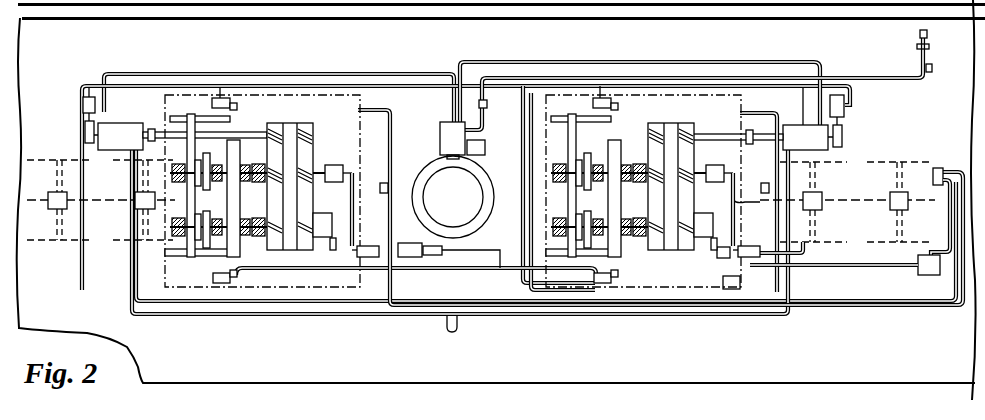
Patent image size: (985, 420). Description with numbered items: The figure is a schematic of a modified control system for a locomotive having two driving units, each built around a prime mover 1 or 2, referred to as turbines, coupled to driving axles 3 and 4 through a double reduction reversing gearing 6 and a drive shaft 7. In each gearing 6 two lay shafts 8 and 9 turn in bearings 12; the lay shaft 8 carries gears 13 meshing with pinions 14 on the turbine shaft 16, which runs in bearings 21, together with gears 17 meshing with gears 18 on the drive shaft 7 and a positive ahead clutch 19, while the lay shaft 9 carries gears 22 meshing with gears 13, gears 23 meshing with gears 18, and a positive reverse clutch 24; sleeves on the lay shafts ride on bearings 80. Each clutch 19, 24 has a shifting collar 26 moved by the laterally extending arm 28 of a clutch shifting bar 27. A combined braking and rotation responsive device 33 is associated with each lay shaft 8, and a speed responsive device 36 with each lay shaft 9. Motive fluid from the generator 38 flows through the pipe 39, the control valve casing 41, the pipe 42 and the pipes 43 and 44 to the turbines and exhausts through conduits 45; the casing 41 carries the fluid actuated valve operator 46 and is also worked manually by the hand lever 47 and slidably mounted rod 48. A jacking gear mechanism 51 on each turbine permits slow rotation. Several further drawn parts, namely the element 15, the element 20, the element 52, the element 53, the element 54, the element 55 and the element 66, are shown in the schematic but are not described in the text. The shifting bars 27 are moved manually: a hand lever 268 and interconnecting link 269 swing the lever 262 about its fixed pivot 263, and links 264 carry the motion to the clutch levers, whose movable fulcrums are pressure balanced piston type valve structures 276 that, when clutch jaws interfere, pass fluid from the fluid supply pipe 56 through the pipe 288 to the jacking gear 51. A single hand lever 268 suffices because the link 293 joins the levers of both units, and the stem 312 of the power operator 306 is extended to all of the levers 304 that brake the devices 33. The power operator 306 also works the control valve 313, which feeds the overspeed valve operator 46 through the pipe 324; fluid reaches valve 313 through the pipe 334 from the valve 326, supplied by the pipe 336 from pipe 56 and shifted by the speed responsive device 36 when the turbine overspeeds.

The prime mover 1 is at (760, 137).
The prime mover 2 is at (120, 136).
The driving axles 3 is at (847, 202).
The driving axles 4 is at (108, 200).
The gearing 6 is at (218, 160).
The drive shaft 7 is at (746, 201).
The lay shaft 8 is at (170, 173).
The lay shaft 9 is at (170, 227).
The bearings 12 is at (423, 193).
The gears 13 is at (481, 186).
The pinions 14 is at (268, 128).
The axle 15 is at (805, 192).
The turbine shaft 16 is at (231, 134).
The gears 17 is at (426, 198).
The gears 18 is at (231, 196).
The positive ahead clutch 19 is at (204, 156).
The motor shaft 20 is at (205, 135).
The bearings 21 is at (294, 125).
The gears 22 is at (480, 242).
The gears 23 is at (424, 250).
The positive reverse clutch 24 is at (391, 226).
The shifting collar 26 is at (197, 186).
The clutch shifting bar 27 is at (176, 264).
The laterally extending arm 28 is at (195, 128).
The combined braking and rotation responsive device 33 is at (325, 165).
The speed responsive device 36 is at (316, 216).
The generator 38 is at (460, 204).
The pipe 39 is at (440, 170).
The control valve casing 41 is at (440, 137).
The pipe 42 is at (452, 112).
The pipe 43 is at (684, 60).
The pipe 44 is at (298, 74).
The conduits 45 is at (206, 317).
The fluid actuated valve operator 46 is at (485, 147).
The hand lever 47 is at (928, 41).
The slidably mounted rod 48 is at (856, 77).
The jacking gear mechanism 51 is at (83, 105).
The valve 52 is at (410, 243).
The fitting 53 is at (503, 252).
The valve 54 is at (507, 132).
The pipe 55 is at (512, 282).
The fluid supply pipe 56 is at (287, 296).
The valve 66 is at (940, 170).
The bearings 80 is at (423, 206).
The lever 262 is at (389, 128).
The fixed pivot 263 is at (564, 182).
The links 264 is at (361, 99).
The hand lever 268 is at (937, 208).
The interconnecting link 269 is at (853, 218).
The pressure balanced piston type valve structure 276 is at (212, 103).
The pipe 288 is at (100, 84).
The link 293 is at (443, 272).
The lever 304 is at (354, 196).
The power operator 306 is at (924, 276).
The stem 312 is at (860, 268).
The control valve 313 is at (790, 253).
The pipe 324 is at (744, 285).
The valve 326 is at (719, 258).
The pipe 334 is at (362, 246).
The pipe 336 is at (722, 285).